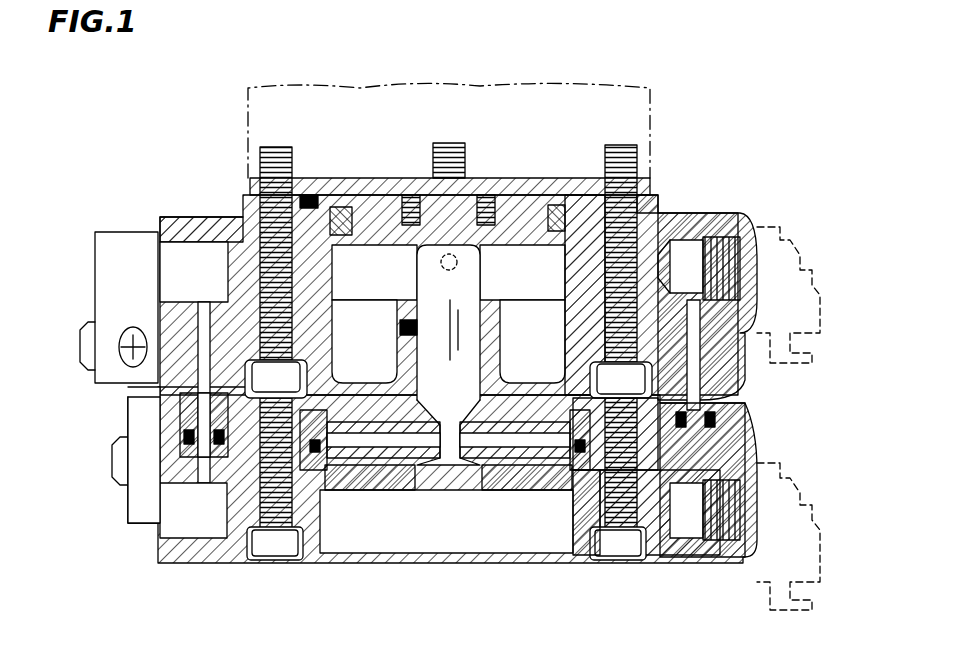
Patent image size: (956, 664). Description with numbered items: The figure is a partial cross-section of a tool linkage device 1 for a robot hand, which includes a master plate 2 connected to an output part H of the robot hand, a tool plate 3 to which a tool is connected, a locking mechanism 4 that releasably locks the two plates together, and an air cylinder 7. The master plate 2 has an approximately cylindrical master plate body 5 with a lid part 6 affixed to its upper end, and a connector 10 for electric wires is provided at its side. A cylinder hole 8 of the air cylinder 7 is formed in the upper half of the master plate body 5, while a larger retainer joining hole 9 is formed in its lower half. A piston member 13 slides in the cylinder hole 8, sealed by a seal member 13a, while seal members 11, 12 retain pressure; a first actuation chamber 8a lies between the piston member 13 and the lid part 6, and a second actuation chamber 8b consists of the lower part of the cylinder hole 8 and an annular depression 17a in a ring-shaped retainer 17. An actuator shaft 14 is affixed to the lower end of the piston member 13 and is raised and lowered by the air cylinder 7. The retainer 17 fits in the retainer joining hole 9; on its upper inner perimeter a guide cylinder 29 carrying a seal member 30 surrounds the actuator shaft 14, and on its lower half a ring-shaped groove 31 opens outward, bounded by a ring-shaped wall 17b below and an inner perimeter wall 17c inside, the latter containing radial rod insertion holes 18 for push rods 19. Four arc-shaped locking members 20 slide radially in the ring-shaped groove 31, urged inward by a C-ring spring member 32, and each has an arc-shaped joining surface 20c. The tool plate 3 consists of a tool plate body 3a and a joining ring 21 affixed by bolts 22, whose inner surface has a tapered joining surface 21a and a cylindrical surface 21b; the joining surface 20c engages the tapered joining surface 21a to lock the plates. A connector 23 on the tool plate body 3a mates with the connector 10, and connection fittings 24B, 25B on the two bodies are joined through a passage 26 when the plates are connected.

The tool linkage device 1 is at (190, 125).
The master plate 2 is at (232, 200).
The tool plate 3 is at (228, 572).
The tool plate body 3a is at (650, 546).
The locking mechanism 4 is at (400, 510).
The master plate body 5 is at (178, 215).
The lid part 6 is at (362, 195).
The air cylinder 7 is at (520, 190).
The cylinder hole 8 is at (575, 290).
The first actuation chamber 8a is at (556, 205).
The second actuation chamber 8b is at (543, 362).
The retainer joining hole 9 is at (204, 300).
The connector 10 is at (128, 232).
The seal member 11 is at (318, 195).
The seal member 12 is at (312, 310).
The piston member 13 is at (392, 200).
The seal member 13a is at (652, 200).
The actuator shaft 14 is at (462, 300).
The retainer 17 is at (705, 345).
The annular depression 17a is at (692, 300).
The ring-shaped wall 17b is at (358, 470).
The inner perimeter wall 17c is at (488, 478).
The rod insertion hole 18 is at (455, 462).
The push rod 19 is at (390, 460).
The arc-shaped locking member 20 is at (330, 470).
The arc-shaped joining surface 20c is at (585, 415).
The joining ring 21 is at (705, 420).
The tapered joining surface 21a is at (565, 470).
The cylindrical surface 21b is at (598, 470).
The bolt 22 is at (262, 552).
The connector 23 is at (145, 498).
The connection fitting 24B is at (788, 237).
The connection fitting 25B is at (788, 478).
The passage 26 is at (700, 402).
The guide cylinder 29 is at (400, 328).
The seal member 30 is at (498, 330).
The ring-shaped groove 31 is at (380, 398).
The spring member 32 is at (292, 553).
The output part H is at (655, 135).